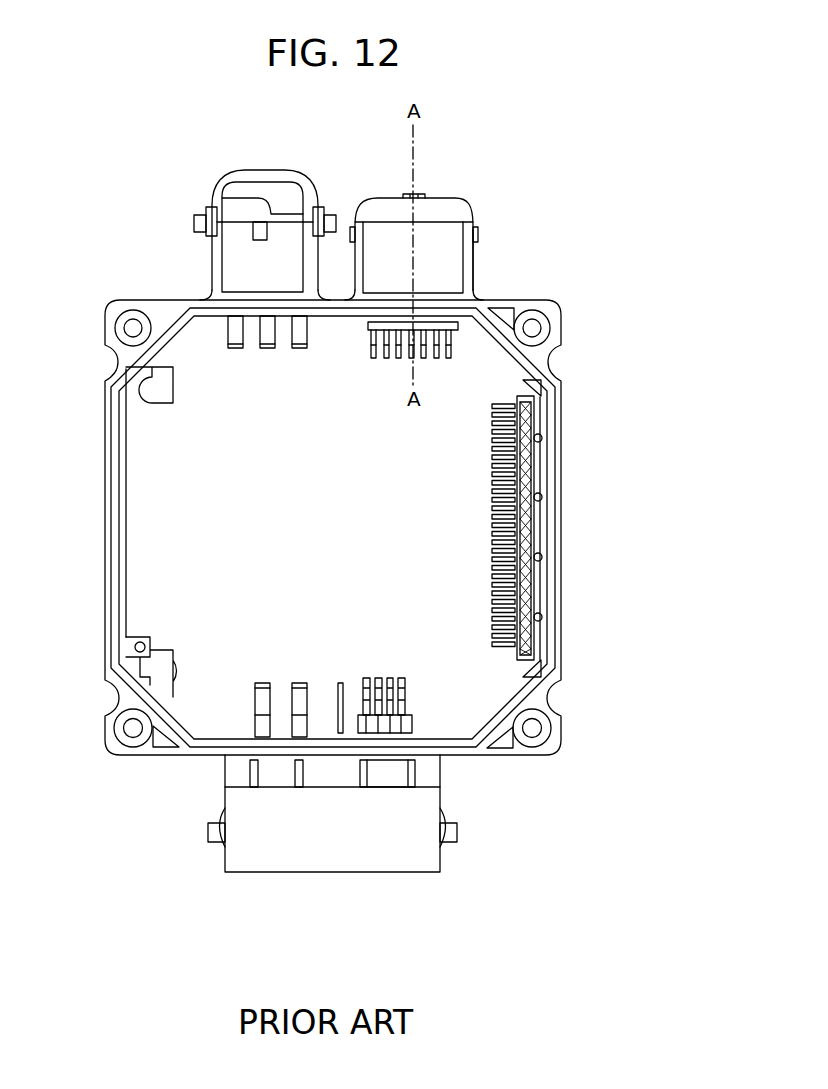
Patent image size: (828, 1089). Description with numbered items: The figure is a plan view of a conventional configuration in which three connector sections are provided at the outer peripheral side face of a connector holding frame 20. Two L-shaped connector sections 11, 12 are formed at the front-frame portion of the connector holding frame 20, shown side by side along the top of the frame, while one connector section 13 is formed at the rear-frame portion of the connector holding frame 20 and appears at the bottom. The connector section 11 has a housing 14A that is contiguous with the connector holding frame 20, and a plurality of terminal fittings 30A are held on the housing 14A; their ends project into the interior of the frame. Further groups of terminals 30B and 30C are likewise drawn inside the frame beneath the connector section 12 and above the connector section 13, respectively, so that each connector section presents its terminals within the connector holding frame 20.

The connector section 11 is at (492, 206).
The connector section 12 is at (176, 181).
The connector section 13 is at (398, 858).
The housing 14A is at (475, 265).
The connector holding frame 20 is at (563, 437).
The terminal fittings 30A is at (373, 358).
The terminals 30B is at (236, 349).
The terminals 30C is at (262, 682).